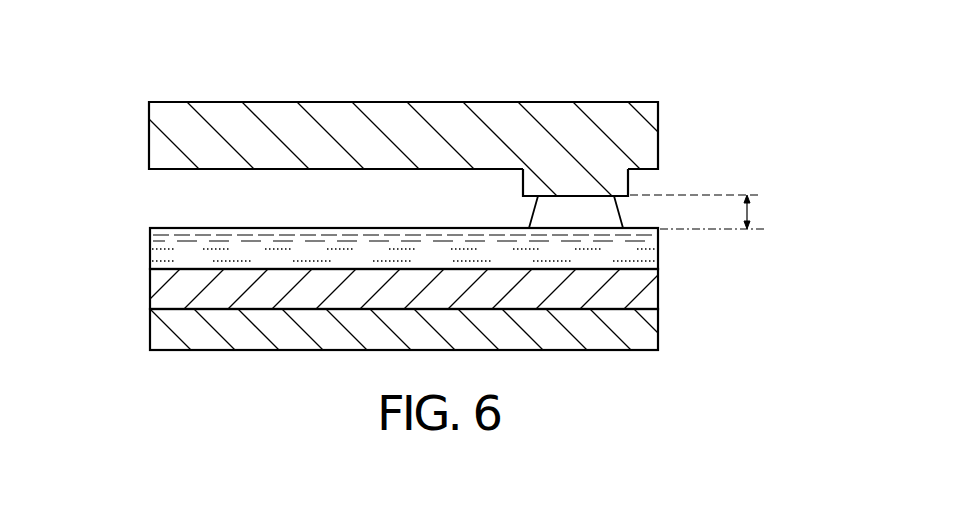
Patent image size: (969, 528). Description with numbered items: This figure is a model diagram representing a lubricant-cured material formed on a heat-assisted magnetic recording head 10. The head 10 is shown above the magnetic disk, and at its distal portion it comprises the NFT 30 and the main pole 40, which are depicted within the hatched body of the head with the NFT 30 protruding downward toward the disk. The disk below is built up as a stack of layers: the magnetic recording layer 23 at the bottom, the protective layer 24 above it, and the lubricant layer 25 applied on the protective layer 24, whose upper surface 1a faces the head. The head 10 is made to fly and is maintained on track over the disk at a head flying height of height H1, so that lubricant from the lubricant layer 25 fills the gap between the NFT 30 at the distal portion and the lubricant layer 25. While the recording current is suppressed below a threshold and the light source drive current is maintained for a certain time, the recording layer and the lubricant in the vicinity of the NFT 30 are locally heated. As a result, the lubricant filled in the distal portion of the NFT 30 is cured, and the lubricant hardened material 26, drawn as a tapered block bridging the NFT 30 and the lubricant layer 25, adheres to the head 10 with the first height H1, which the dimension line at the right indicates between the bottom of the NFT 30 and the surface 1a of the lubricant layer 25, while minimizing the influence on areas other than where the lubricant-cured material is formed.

The heat-assisted magnetic recording head 10 is at (611, 77).
The main pole 40 is at (150, 137).
The NFT 30 is at (523, 180).
The lubricant hardened material 26 is at (538, 215).
The upper surface of layer 25 1a is at (290, 228).
The lubricant layer 25 is at (151, 246).
The protective layer 24 is at (151, 291).
The magnetic recording layer 23 is at (151, 330).
The first height H1 is at (751, 212).